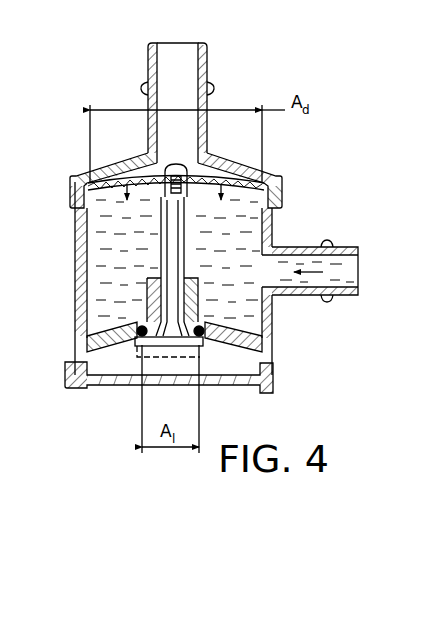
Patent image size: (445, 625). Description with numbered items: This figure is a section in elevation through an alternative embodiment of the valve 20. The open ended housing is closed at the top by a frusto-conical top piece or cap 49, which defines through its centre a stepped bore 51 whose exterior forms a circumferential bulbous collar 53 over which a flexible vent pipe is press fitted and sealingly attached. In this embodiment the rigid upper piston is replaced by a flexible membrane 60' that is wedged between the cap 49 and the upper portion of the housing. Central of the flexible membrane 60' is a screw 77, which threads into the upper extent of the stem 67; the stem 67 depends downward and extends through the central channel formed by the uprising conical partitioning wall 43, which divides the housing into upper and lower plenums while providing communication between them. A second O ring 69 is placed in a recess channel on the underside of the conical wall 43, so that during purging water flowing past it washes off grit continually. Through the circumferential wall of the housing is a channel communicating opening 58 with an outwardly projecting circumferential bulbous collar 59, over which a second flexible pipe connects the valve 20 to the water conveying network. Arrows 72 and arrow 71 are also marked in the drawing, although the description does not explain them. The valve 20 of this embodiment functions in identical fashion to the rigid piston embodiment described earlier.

The stepped bore 51 is at (178, 58).
The circumferential bulbous collar 53 is at (216, 88).
The frusto-conical top piece 49 is at (78, 174).
The flexible membrane 60' is at (205, 169).
The flow arrows 72 is at (88, 194).
The screw 77 is at (176, 166).
The stem 67 is at (176, 235).
The valve 20 is at (274, 336).
The channel communicating opening 58 is at (290, 297).
The outwardly projecting circumferential bulbous collar 59 is at (330, 246).
The flow arrow 71 is at (323, 272).
The conical wall 43 is at (235, 343).
The second O ring 69 is at (203, 347).